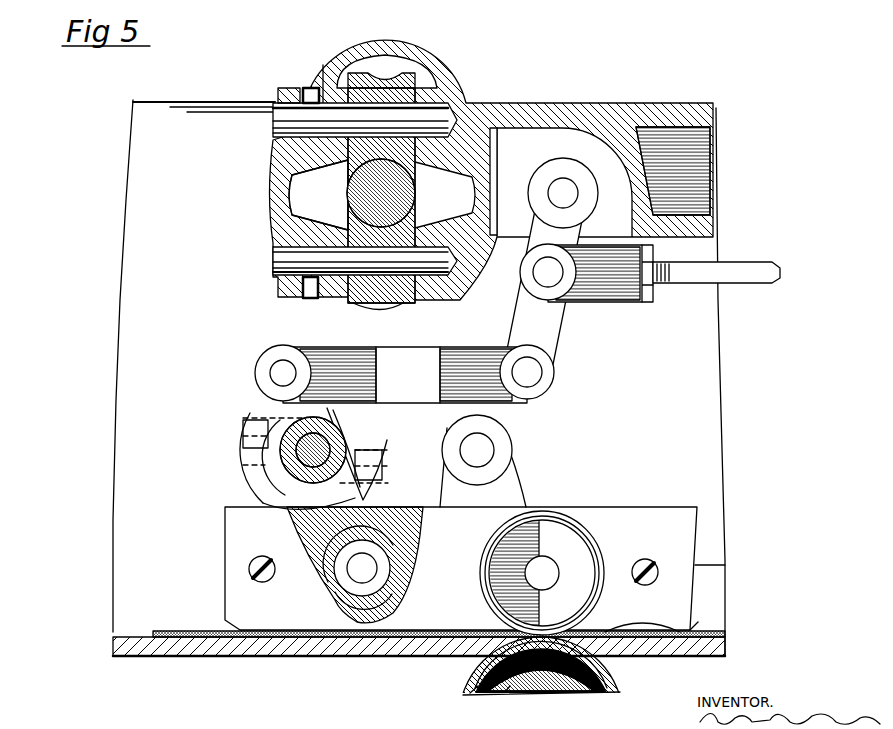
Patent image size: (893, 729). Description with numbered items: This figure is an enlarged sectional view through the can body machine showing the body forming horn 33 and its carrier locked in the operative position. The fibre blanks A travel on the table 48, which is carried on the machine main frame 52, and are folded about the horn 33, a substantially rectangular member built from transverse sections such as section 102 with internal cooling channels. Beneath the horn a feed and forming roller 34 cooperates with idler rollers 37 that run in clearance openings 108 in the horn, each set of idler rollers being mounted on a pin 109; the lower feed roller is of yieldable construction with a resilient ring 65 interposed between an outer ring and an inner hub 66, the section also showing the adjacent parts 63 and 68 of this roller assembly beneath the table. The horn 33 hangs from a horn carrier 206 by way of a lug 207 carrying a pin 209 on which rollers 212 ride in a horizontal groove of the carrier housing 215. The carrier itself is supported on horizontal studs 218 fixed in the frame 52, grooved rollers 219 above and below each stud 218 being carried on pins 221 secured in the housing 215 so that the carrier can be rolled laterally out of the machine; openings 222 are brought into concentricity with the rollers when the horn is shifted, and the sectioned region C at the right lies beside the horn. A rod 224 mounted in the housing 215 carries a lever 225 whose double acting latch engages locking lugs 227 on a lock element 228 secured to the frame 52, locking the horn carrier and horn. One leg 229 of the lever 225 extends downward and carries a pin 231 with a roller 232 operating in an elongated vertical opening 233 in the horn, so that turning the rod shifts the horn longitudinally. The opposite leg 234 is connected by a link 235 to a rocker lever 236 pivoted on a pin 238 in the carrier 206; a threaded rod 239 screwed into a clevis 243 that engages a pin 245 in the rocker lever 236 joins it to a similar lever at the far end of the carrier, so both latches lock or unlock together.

The horn carrier 206 is at (278, 198).
The carrier housing 215 is at (290, 160).
The stud 218 is at (400, 193).
The grooved roller 219 is at (412, 82).
The pin 221 is at (290, 117).
The pivot pin 238 is at (560, 188).
The clevis 243 is at (600, 273).
The pin 245 is at (540, 278).
The threaded rod 239 is at (700, 272).
The rocker lever 236 is at (545, 331).
The link 235 is at (345, 357).
The machine main frame 52 is at (698, 380).
The opposite leg 234 is at (287, 410).
The rod 224 is at (277, 412).
The locking lug 227 is at (255, 425).
The lock element 228 is at (255, 473).
The leg 229 is at (300, 497).
The lever 225 is at (373, 483).
The pin 209 is at (480, 448).
The roller 212 is at (505, 440).
The lug 207 is at (508, 480).
The idler roller 37 is at (560, 545).
The body forming horn 33 is at (609, 523).
The clearance opening 108 is at (598, 544).
The pin 109 is at (550, 572).
The roller 232 is at (378, 550).
The pin 231 is at (370, 568).
The elongated vertical opening 233 is at (352, 610).
The transverse section 102 is at (461, 568).
The table 48 is at (130, 643).
The openings 222 is at (650, 622).
The section C is at (712, 575).
The fibre blank A is at (692, 630).
The feed and forming roller 34 is at (470, 665).
The outer band 68 is at (603, 680).
The resilient ring 65 is at (487, 692).
The hub 66 is at (510, 692).
The core 63 is at (548, 683).